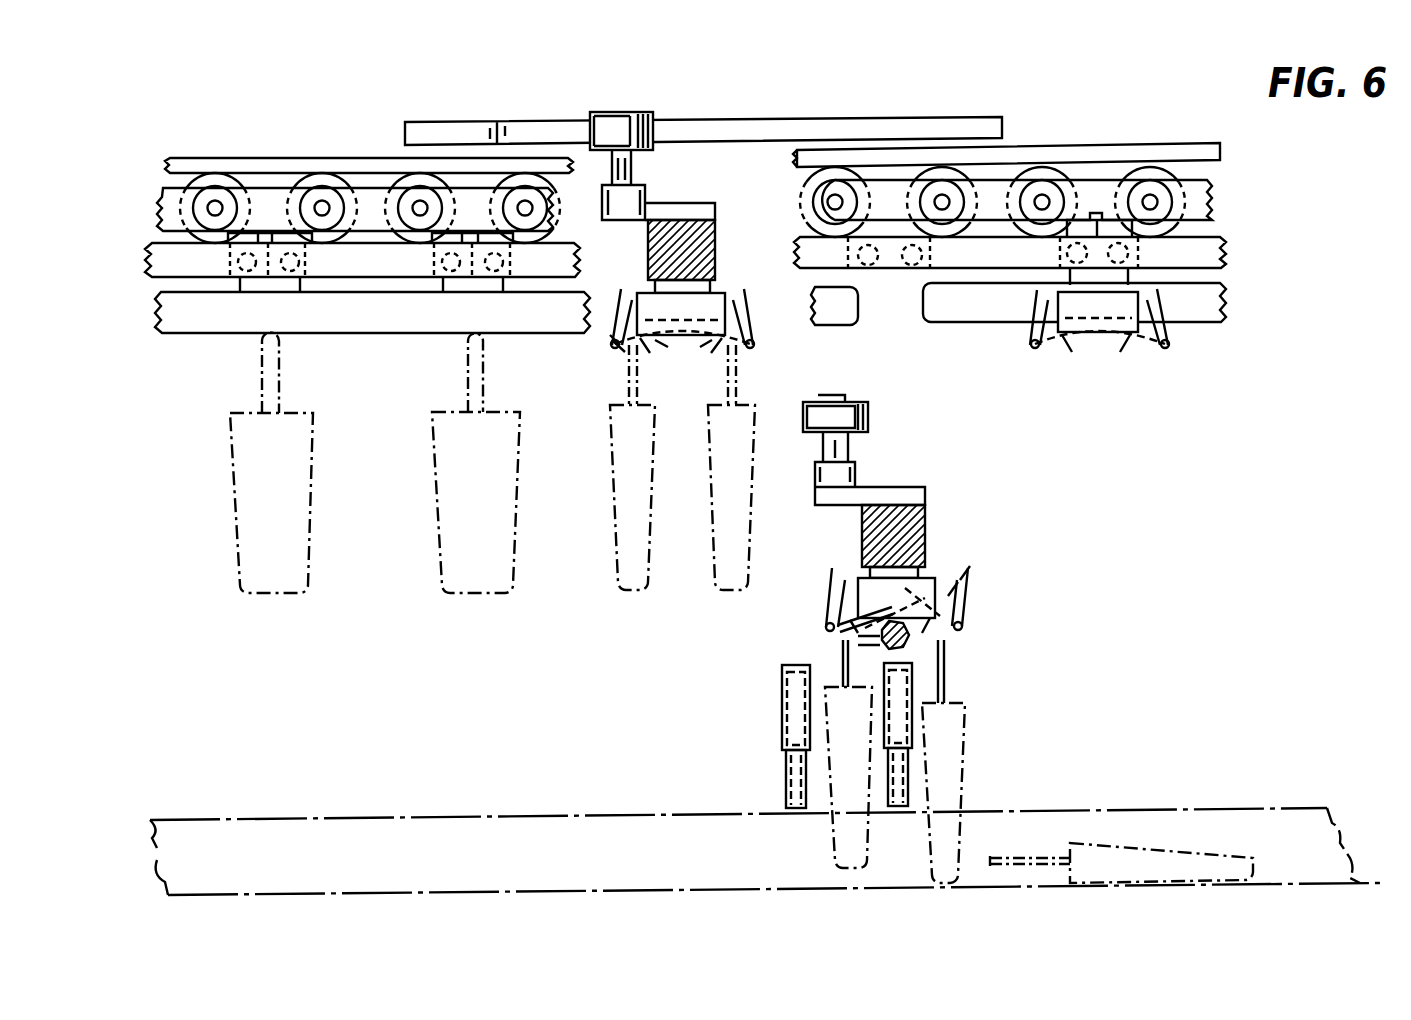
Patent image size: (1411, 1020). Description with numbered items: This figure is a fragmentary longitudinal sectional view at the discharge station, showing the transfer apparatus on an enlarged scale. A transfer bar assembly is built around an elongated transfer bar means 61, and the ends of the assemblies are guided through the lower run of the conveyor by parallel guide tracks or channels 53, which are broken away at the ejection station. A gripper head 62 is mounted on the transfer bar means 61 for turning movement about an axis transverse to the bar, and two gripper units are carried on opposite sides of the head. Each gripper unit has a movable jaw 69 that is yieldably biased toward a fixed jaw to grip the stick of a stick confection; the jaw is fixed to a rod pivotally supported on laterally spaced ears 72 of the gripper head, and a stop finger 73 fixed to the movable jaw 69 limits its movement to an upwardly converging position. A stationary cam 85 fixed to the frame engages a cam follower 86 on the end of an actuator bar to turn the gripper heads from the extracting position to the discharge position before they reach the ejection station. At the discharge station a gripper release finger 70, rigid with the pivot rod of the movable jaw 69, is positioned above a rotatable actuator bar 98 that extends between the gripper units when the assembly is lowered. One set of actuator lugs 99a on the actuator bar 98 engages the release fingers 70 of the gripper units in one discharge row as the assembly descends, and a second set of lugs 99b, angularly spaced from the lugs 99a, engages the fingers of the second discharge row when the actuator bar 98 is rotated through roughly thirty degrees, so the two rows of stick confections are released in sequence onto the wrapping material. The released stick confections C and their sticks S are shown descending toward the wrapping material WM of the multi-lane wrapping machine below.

The guide track 53 is at (1202, 302).
The transfer bar means 61 is at (708, 250).
The gripper head 62 is at (700, 305).
The movable jaw 69 is at (608, 352).
The gripper release finger 70 is at (665, 340).
The ears 72 is at (940, 590).
The stop finger 73 is at (965, 590).
The stationary cam 85 is at (740, 128).
The cam follower 86 is at (635, 120).
The actuator bar 98 is at (905, 648).
The actuator lugs 99a is at (913, 628).
The second set of lugs 99b is at (878, 640).
The stem S is at (280, 356).
The container C is at (312, 488).
The work table WM is at (1058, 810).